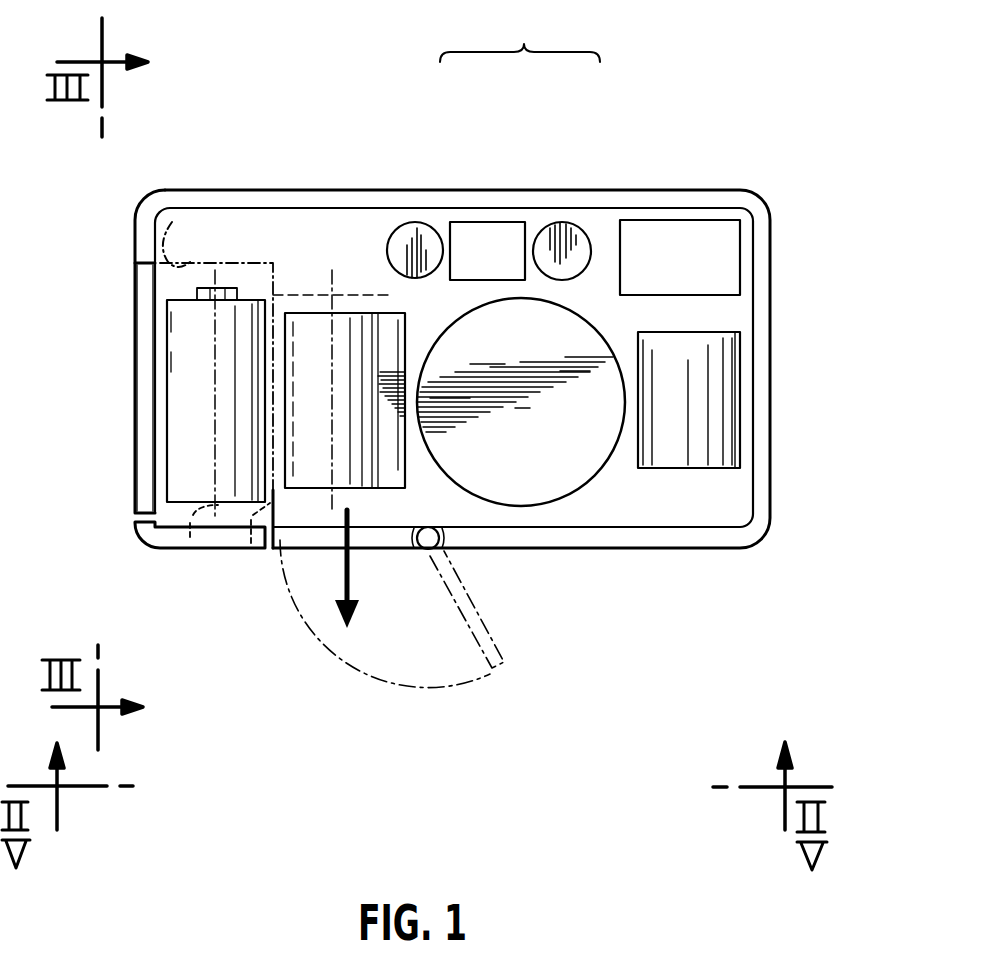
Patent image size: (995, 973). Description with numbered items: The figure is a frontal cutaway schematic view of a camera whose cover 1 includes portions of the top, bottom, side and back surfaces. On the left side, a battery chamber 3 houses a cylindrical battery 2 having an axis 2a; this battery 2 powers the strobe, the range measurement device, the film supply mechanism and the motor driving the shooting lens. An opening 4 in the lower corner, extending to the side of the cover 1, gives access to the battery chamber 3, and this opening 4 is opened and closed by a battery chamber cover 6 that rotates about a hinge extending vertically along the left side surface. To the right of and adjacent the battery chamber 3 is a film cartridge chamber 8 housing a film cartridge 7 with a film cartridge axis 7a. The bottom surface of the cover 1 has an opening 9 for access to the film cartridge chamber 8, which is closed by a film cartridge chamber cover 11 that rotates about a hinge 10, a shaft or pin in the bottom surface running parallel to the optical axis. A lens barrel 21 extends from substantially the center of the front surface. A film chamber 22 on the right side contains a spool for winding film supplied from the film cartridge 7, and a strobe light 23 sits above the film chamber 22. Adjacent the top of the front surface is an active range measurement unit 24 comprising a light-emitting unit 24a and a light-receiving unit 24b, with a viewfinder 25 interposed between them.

The cover 1 is at (368, 190).
The cylindrical battery 2 is at (182, 318).
The axis 2a is at (195, 545).
The battery chamber 3 is at (186, 225).
The opening 4 is at (116, 414).
The battery chamber cover 6 is at (153, 355).
The film cartridge 7 is at (307, 330).
The film cartridge axis 7a is at (336, 321).
The film cartridge chamber 8 is at (255, 548).
The opening 9 is at (377, 574).
The hinge 10 is at (424, 550).
The film cartridge chamber cover 11 is at (298, 537).
The lens barrel 21 is at (583, 458).
The film chamber 22 is at (725, 420).
The strobe light 23 is at (694, 246).
The active range measurement unit 24 is at (520, 35).
The light-emitting unit 24a is at (418, 233).
The light-receiving unit 24b is at (567, 233).
The viewfinder 25 is at (488, 242).